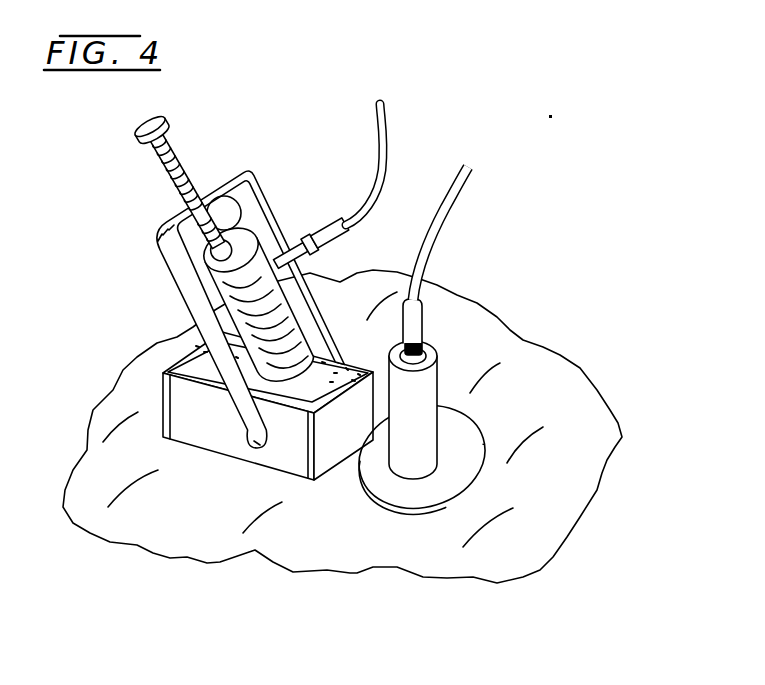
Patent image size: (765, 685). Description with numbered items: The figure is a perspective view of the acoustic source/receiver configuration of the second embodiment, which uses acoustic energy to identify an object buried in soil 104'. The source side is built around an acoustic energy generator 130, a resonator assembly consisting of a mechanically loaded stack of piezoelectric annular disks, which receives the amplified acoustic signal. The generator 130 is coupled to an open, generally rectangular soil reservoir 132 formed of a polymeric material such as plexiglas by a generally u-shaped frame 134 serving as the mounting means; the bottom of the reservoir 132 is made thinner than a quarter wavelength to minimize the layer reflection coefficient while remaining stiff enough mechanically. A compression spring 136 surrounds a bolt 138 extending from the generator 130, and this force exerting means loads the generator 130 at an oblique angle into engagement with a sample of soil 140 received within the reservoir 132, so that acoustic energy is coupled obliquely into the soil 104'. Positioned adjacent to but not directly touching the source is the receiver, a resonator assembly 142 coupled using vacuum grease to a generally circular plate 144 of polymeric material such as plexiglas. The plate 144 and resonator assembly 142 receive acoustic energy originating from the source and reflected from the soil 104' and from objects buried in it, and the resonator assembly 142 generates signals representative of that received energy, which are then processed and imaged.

The soil 104' is at (342, 426).
The acoustic energy generator 130 is at (215, 286).
The soil reservoir 132 is at (207, 430).
The u-shaped frame 134 is at (233, 172).
The compression spring 136 is at (250, 193).
The bolt 138 is at (165, 166).
The sample of soil 140 is at (340, 348).
The resonator assembly 142 is at (437, 383).
The circular plate 144 is at (397, 483).